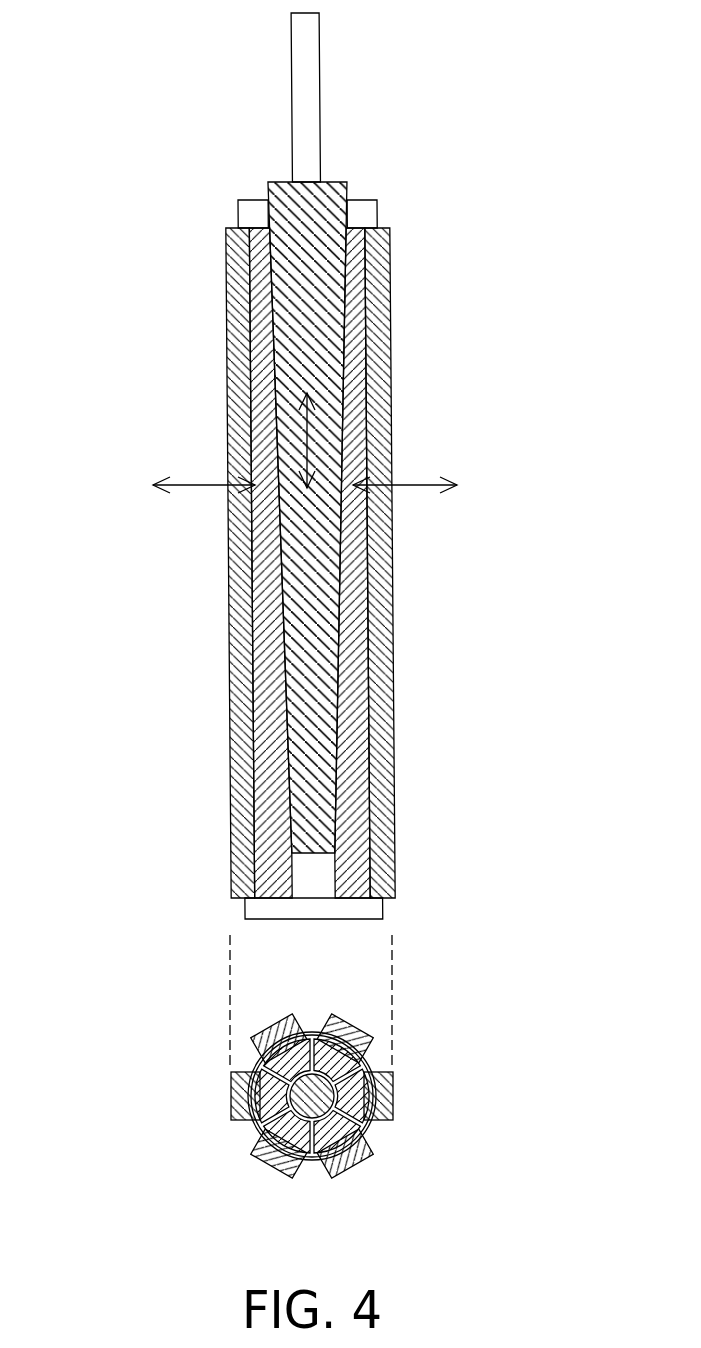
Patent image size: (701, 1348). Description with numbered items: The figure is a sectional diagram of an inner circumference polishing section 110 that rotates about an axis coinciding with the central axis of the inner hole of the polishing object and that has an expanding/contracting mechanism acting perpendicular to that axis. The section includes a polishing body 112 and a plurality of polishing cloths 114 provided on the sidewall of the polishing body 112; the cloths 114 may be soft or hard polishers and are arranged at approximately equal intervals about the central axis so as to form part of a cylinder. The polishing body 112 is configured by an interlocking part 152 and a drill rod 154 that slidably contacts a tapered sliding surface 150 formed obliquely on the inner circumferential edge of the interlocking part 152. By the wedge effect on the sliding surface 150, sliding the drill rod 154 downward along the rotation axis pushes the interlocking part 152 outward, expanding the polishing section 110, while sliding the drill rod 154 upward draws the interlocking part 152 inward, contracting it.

The inner circumference polishing section 110 is at (383, 153).
The polishing body 112 is at (375, 909).
The polishing cloths 114 is at (230, 702).
The tapered sliding surface 150 is at (270, 335).
The interlocking part 152 is at (273, 768).
The drill rod 154 is at (268, 183).